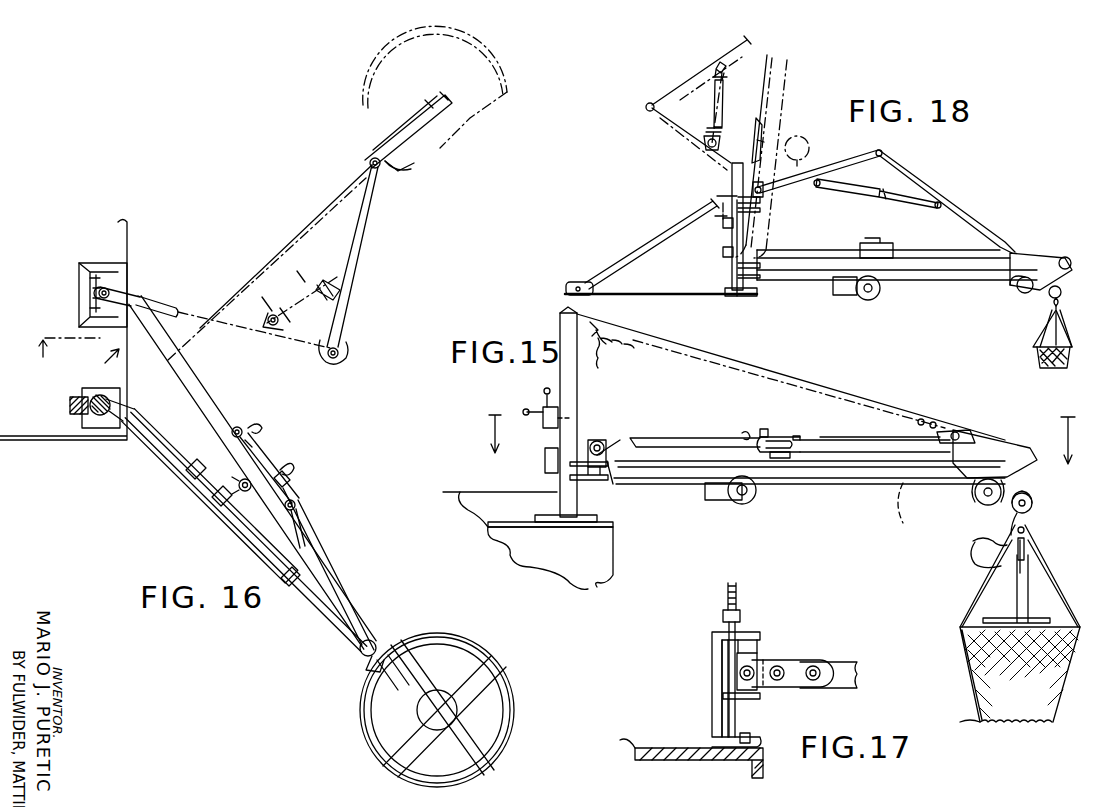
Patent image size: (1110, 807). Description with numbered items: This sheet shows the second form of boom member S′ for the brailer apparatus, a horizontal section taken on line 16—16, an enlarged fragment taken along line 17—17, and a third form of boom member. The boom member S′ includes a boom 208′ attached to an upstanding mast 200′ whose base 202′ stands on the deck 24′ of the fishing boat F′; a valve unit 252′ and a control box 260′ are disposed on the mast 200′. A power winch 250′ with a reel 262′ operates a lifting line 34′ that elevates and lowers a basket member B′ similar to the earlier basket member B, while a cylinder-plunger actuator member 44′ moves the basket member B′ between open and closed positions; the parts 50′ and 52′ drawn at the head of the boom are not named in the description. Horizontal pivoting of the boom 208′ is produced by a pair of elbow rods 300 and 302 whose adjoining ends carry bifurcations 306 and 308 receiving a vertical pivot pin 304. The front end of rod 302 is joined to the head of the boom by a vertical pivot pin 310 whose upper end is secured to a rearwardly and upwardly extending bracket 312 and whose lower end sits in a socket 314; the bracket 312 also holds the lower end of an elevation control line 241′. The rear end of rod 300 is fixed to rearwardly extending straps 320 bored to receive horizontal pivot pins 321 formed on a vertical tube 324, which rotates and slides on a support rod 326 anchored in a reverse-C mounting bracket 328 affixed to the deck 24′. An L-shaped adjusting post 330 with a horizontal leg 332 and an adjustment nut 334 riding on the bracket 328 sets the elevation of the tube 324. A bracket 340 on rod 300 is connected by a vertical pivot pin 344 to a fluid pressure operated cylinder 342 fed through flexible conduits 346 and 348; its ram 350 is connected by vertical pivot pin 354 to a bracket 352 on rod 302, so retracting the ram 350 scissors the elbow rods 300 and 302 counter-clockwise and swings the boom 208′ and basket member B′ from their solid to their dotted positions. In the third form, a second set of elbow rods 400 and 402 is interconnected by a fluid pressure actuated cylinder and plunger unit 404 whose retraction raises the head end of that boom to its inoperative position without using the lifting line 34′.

In FIG. 16, the deck 24′ is at (86, 278).
In FIG. 15, the deck 24′ is at (473, 521).
In FIG. 17, the deck 24′ is at (681, 753).
In FIG. 16, the vertically extending tube 324 is at (106, 285).
In FIG. 17, the vertically extending tube 324 is at (755, 655).
In FIG. 16, the support rod 326 is at (93, 288).
In FIG. 17, the support rod 326 is at (748, 650).
In FIG. 16, the mounting bracket 328 is at (92, 293).
In FIG. 17, the mounting bracket 328 is at (712, 636).
In FIG. 16, the adjusting post 330 is at (96, 300).
In FIG. 17, the adjusting post 330 is at (728, 660).
In FIG. 16, the pivot pins 321 is at (112, 290).
In FIG. 17, the pivot pins 321 is at (740, 673).
In FIG. 16, the straps 320 is at (140, 300).
In FIG. 17, the straps 320 is at (790, 688).
In FIG. 17, the horizontally extending leg 332 is at (723, 696).
In FIG. 17, the adjustment nut 334 is at (723, 615).
In FIG. 16, the section line 17— 17 is at (74, 363).
In FIG. 15, the section line 16— 16 is at (783, 451).
In FIG. 16, the control box 260′ is at (70, 405).
In FIG. 15, the control box 260′ is at (551, 407).
In FIG. 15, the valve unit 252′ is at (545, 462).
In FIG. 16, the mast 200′ is at (96, 413).
In FIG. 15, the mast 200′ is at (578, 408).
In FIG. 16, the base 202′ is at (101, 415).
In FIG. 15, the base 202′ is at (590, 518).
In FIG. 16, the elbow rod 300 is at (202, 403).
In FIG. 15, the elbow rod 300 is at (672, 440).
In FIG. 17, the elbow rod 300 is at (838, 686).
In FIG. 16, the elbow rod 302 is at (323, 580).
In FIG. 15, the elbow rod 302 is at (855, 440).
In FIG. 16, the vertical pivot pin 304 is at (252, 486).
In FIG. 15, the vertical pivot pin 304 is at (762, 428).
In FIG. 15, the bifurcation 306 is at (770, 433).
In FIG. 15, the bifurcation 308 is at (785, 460).
In FIG. 15, the vertical pivot pin 310 is at (935, 433).
In FIG. 15, the bracket 312 is at (965, 432).
In FIG. 15, the socket 314 is at (909, 519).
In FIG. 16, the bracket 340 is at (242, 428).
In FIG. 16, the fluid pressure operated cylinder 342 is at (262, 455).
In FIG. 15, the fluid pressure operated cylinder 342 is at (728, 435).
In FIG. 16, the vertical pivot pin 344 is at (260, 424).
In FIG. 16, the flexible conduit 346 is at (288, 466).
In FIG. 16, the flexible conduit 348 is at (252, 444).
In FIG. 16, the ram 350 is at (290, 480).
In FIG. 16, the bracket 352 is at (300, 523).
In FIG. 16, the vertical pivot pin 354 is at (296, 505).
In FIG. 16, the boom 208′ is at (240, 526).
In FIG. 15, the boom 208′ is at (858, 489).
In FIG. 16, the power winch 250′ is at (203, 500).
In FIG. 15, the power winch 250′ is at (726, 502).
In FIG. 15, the reel 262′ is at (760, 502).
In FIG. 15, the elevation control line 241′ is at (735, 372).
In FIG. 15, the lifting line 34′ is at (925, 485).
In FIG. 15, the sheave 50′ is at (1015, 515).
In FIG. 15, the hook 52′ is at (985, 562).
In FIG. 15, the actuator member 44′ is at (1025, 550).
In FIG. 18, the elbow rod 400 is at (918, 178).
In FIG. 18, the elbow rod 402 is at (833, 163).
In FIG. 18, the cylinder and plunger unit 404 is at (843, 195).
In FIG. 16, the boom member S′ is at (175, 490).
In FIG. 15, the boom member S′ is at (848, 395).
In FIG. 17, the boom member S′ is at (848, 665).
In FIG. 15, the basket member B is at (1088, 622).
In FIG. 16, the basket member B′ is at (360, 716).
In FIG. 15, the fishing boat F′ is at (572, 545).